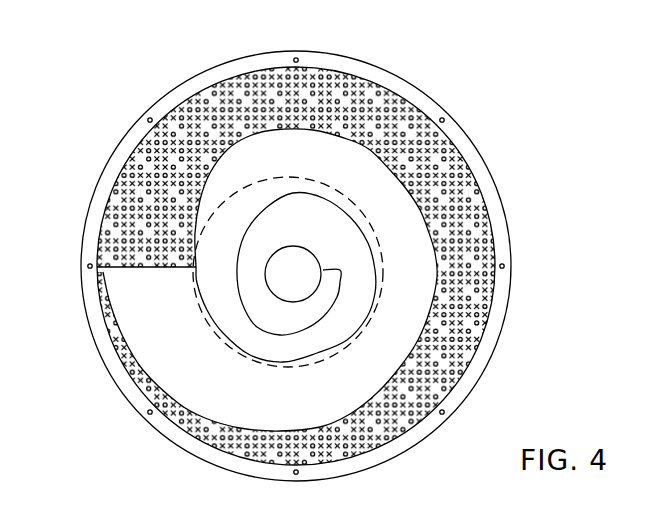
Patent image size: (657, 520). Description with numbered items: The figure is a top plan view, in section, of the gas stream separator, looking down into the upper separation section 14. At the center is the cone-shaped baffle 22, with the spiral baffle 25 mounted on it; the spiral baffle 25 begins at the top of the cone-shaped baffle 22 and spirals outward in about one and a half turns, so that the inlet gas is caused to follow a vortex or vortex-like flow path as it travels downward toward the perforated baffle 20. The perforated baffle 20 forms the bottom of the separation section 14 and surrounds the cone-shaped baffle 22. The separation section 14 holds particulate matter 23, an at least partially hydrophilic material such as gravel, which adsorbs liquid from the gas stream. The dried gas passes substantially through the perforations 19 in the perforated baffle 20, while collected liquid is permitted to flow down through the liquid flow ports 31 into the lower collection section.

The separation section 14 is at (187, 133).
The perforations 19 is at (458, 207).
The perforated baffle 20 is at (401, 100).
The cone-shaped baffle 22 is at (200, 254).
The particulate matter 23 is at (300, 247).
The spiral baffle 25 is at (404, 211).
The liquid flow ports 31 is at (505, 264).